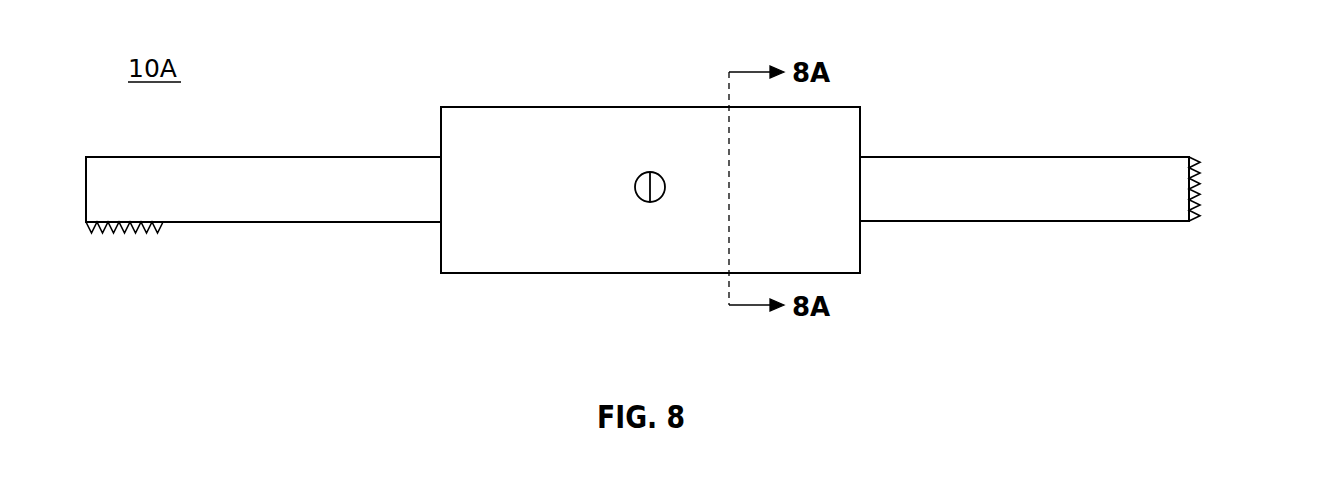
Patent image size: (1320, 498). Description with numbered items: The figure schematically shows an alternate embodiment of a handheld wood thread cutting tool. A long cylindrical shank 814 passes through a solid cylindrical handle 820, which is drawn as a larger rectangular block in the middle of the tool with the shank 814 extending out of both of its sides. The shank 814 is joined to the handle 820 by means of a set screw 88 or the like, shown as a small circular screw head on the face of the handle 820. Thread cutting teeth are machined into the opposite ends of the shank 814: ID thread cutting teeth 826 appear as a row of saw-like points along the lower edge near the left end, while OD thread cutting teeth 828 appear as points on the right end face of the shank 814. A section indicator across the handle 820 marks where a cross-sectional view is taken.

The cylindrical shank 814 is at (250, 156).
The cylindrical handle 820 is at (537, 106).
The ID thread cutting teeth 826 is at (129, 261).
The OD thread cutting teeth 828 is at (1217, 203).
The set screw 88 is at (645, 203).